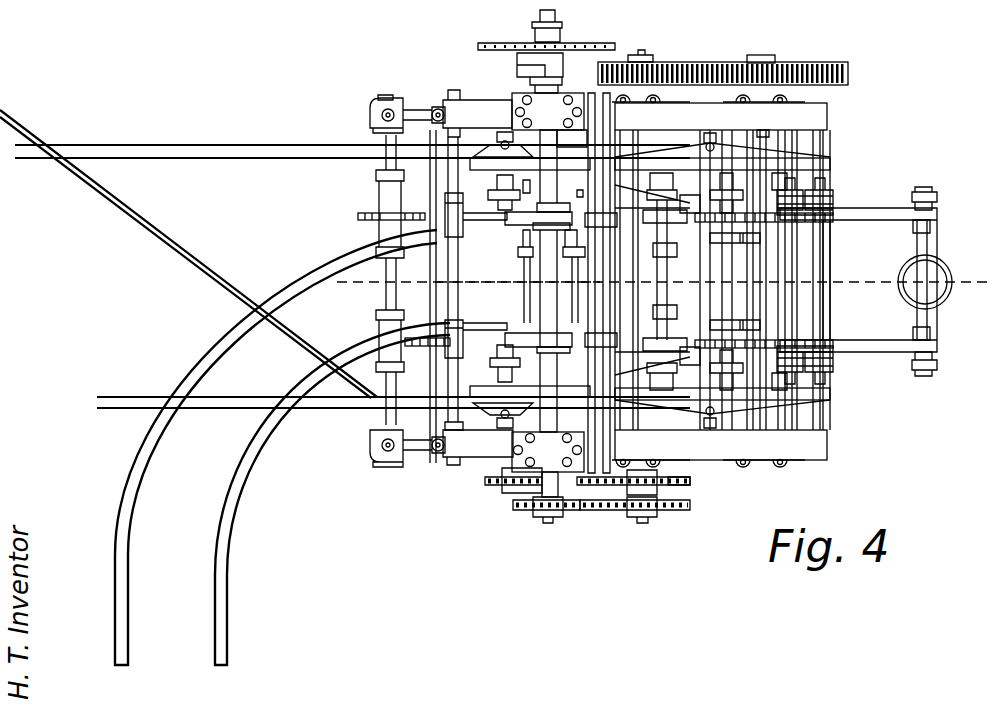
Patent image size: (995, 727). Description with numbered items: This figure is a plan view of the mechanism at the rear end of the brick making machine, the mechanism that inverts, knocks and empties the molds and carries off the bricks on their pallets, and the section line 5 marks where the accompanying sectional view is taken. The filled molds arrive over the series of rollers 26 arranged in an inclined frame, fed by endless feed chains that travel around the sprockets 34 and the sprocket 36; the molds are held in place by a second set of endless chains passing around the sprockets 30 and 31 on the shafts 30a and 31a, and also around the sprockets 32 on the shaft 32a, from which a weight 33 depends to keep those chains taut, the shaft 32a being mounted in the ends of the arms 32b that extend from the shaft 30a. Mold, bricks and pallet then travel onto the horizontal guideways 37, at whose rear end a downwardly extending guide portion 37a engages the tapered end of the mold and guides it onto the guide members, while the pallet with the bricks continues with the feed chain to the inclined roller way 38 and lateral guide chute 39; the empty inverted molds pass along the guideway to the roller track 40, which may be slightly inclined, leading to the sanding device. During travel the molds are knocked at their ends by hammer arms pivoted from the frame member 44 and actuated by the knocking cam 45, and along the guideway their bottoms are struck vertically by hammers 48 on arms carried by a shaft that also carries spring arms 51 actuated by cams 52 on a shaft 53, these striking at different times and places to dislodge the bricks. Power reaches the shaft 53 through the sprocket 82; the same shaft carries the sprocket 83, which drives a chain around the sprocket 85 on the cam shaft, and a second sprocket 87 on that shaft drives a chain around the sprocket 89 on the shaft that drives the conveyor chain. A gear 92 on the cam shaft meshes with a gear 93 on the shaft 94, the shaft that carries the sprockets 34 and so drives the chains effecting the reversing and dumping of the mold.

The section line 5 is at (352, 268).
The rollers 26 is at (697, 262).
The sprockets 30 is at (802, 228).
The shaft 30a is at (797, 267).
The sprockets 31 is at (834, 200).
The shaft 31a is at (823, 295).
The sprockets 32 is at (940, 199).
The shaft 32a is at (930, 323).
The arms 32b is at (877, 220).
The weight 33 is at (947, 268).
The sprockets 34 is at (781, 228).
The sprocket 36 is at (367, 212).
The horizontal guideways 37 is at (645, 160).
The downwardly extending guide portion 37a is at (820, 164).
The inclined roller way 38 is at (347, 248).
The lateral guide chute 39 is at (215, 610).
The roller track 40 is at (302, 159).
The frame member 44 is at (592, 100).
The knocking cam 45 is at (657, 280).
The hammers 48 is at (652, 232).
The spring arms 51 is at (508, 230).
The cams 52 is at (547, 228).
The shaft 53 is at (518, 284).
The sprocket 82 is at (517, 46).
The sprocket 83 is at (527, 513).
The sprocket 85 is at (608, 512).
The second sprocket 87 is at (695, 482).
The sprocket 89 is at (497, 490).
The gear 92 is at (623, 58).
The gear 93 is at (722, 62).
The shaft 94 is at (772, 56).